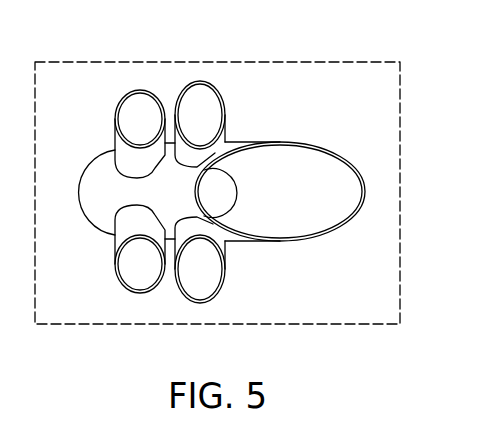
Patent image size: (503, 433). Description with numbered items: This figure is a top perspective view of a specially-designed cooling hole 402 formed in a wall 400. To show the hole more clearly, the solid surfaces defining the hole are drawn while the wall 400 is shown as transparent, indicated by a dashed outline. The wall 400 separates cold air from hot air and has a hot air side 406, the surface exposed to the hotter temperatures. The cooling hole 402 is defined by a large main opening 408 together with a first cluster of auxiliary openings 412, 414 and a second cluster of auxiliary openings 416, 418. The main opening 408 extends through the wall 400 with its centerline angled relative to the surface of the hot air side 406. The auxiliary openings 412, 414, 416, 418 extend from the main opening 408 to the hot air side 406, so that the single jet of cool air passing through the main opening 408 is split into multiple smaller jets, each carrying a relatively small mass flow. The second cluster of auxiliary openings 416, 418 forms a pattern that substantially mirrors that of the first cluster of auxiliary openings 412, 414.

The wall 400 is at (377, 91).
The cooling hole 402 is at (290, 250).
The hot air side 406 is at (388, 260).
The main opening 408 is at (340, 189).
The auxiliary opening of first cluster 412 is at (140, 280).
The auxiliary opening of first cluster 414 is at (202, 290).
The auxiliary opening of second cluster 416 is at (138, 102).
The auxiliary opening of second cluster 418 is at (202, 92).